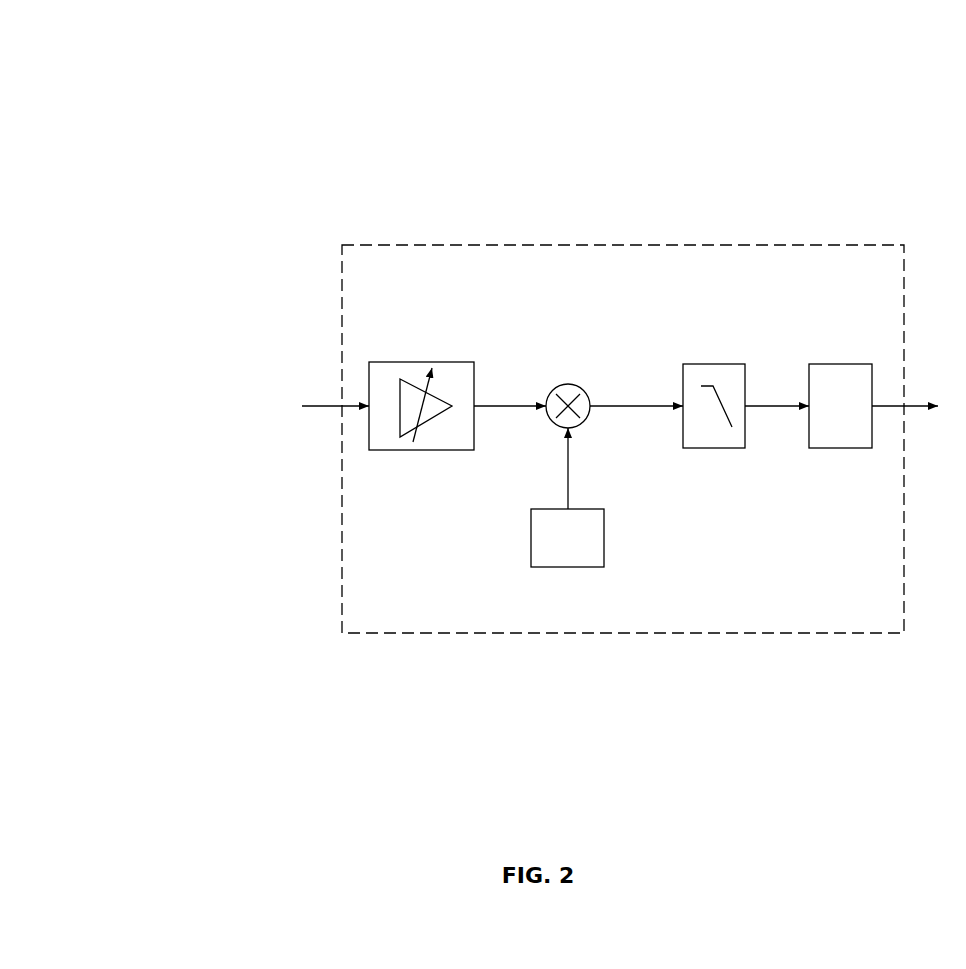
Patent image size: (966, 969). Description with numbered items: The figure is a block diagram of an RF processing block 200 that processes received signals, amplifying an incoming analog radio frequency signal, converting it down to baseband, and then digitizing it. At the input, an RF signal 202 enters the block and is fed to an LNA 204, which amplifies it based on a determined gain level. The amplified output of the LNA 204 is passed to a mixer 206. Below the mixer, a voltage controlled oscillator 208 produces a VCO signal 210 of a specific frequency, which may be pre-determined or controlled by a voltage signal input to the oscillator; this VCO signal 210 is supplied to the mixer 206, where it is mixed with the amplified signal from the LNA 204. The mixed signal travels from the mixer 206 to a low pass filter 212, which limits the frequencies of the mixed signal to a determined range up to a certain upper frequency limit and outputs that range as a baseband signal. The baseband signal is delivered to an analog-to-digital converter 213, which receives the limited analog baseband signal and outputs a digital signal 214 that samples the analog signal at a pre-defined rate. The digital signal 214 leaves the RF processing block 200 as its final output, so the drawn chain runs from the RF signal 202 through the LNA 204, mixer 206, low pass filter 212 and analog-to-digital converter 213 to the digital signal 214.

The RF processing block 200 is at (117, 99).
The RF signal 202 is at (320, 406).
The LNA 204 is at (453, 362).
The mixer 206 is at (570, 384).
The voltage controlled oscillator 208 is at (579, 567).
The VCO signal 210 is at (568, 477).
The low pass filter 212 is at (713, 364).
The analog-to-digital converter 213 is at (847, 364).
The digital signal 214 is at (920, 403).